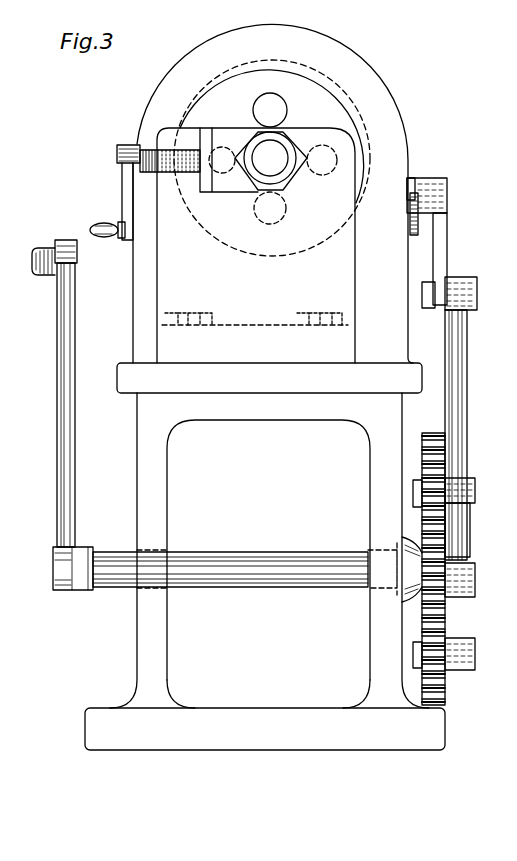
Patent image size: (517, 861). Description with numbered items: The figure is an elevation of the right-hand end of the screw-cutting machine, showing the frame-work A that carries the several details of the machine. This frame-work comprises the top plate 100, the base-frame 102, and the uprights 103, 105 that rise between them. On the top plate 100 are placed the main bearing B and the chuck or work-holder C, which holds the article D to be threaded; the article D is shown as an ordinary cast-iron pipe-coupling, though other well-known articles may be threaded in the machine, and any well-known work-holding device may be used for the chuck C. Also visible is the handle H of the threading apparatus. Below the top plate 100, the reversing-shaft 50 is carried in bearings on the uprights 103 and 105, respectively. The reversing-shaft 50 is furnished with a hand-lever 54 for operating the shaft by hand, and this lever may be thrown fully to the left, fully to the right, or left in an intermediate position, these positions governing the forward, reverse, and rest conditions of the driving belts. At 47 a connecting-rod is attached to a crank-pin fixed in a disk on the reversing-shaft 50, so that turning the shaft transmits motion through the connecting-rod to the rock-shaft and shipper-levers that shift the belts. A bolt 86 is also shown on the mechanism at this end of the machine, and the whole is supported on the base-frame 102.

The frame-work A is at (150, 453).
The main bearing B is at (386, 104).
The chuck C is at (266, 192).
The article to be threaded D is at (283, 148).
The crank handle H is at (193, 108).
The top plate 100 is at (269, 378).
The base-frame 102 is at (265, 729).
The upright 105 is at (155, 647).
The upright 103 is at (380, 643).
The reversing-shaft 50 is at (282, 565).
The hand-lever 54 is at (68, 424).
The crank-pin attachment 47 is at (471, 590).
The bolt 86 is at (472, 672).